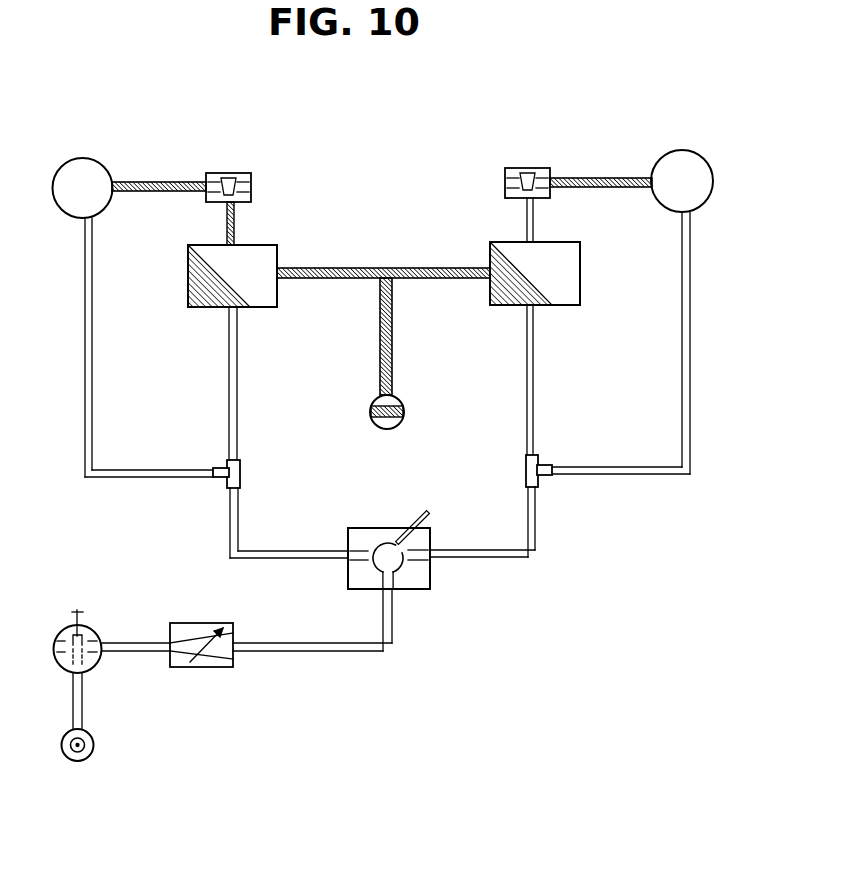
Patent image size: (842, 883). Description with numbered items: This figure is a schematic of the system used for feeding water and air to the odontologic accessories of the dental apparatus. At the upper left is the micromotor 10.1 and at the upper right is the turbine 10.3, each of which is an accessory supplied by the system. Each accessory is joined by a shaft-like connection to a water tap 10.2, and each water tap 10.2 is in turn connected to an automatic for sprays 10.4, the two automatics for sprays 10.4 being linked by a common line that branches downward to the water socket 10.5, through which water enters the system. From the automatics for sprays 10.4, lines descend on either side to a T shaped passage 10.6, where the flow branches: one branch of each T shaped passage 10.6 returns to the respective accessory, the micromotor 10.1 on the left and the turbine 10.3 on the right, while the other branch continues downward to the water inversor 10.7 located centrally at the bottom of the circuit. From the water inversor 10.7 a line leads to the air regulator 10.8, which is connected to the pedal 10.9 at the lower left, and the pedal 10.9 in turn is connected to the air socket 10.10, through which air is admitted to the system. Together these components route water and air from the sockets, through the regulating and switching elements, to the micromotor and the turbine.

The micromotor 10.1 is at (133, 306).
The water tap 10.2 is at (382, 206).
The turbine 10.3 is at (650, 312).
The automatic for sprays 10.4 is at (384, 274).
The water socket 10.5 is at (406, 353).
The T shaped passage 10.6 is at (382, 431).
The water inversor 10.7 is at (350, 581).
The air regulator 10.8 is at (186, 638).
The pedal 10.9 is at (90, 669).
The air socket 10.10 is at (102, 745).